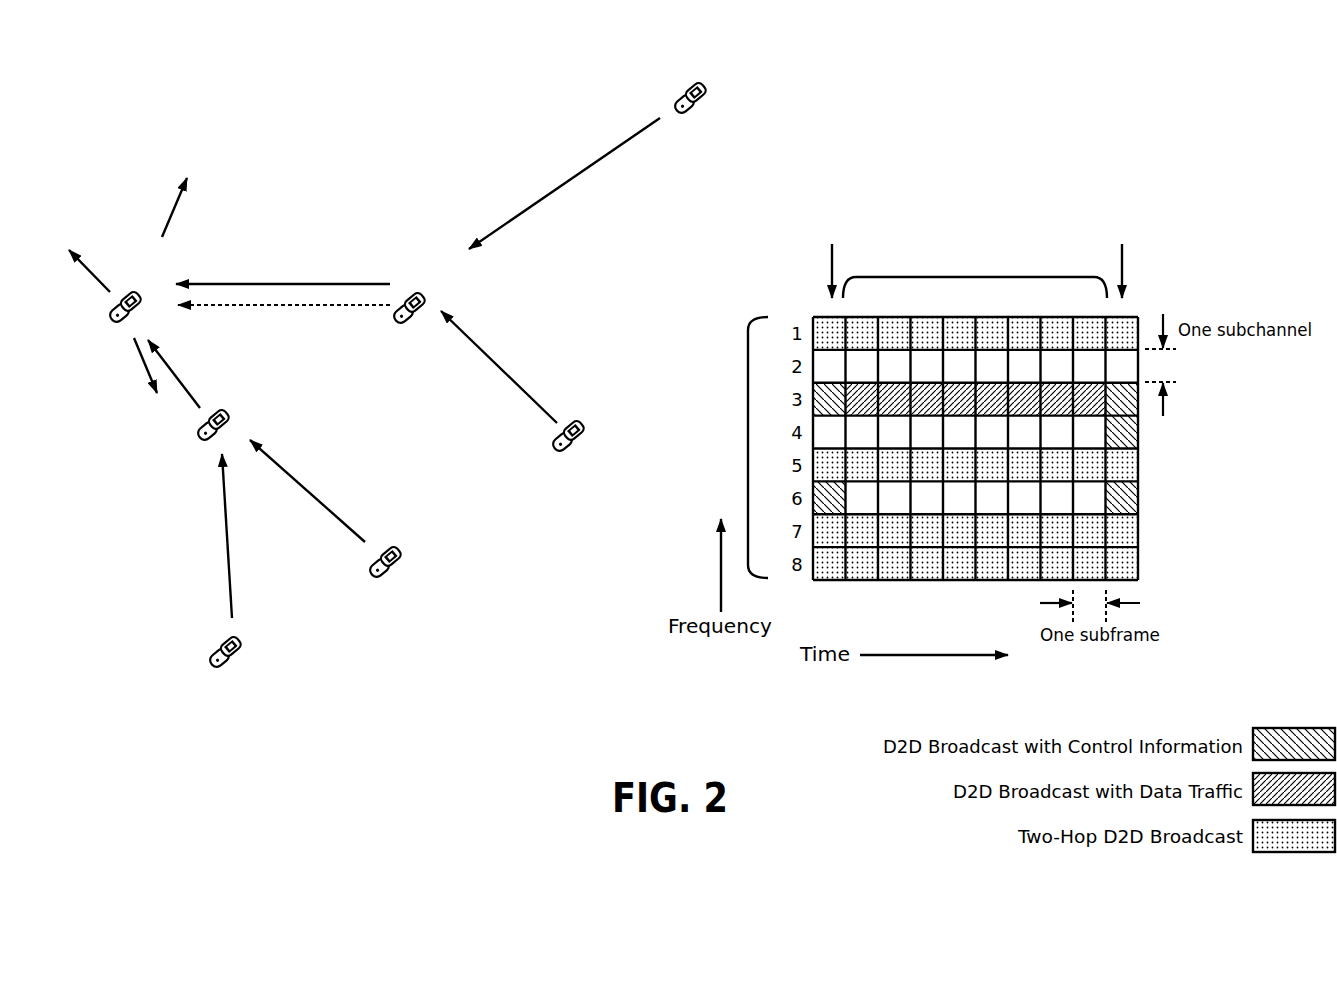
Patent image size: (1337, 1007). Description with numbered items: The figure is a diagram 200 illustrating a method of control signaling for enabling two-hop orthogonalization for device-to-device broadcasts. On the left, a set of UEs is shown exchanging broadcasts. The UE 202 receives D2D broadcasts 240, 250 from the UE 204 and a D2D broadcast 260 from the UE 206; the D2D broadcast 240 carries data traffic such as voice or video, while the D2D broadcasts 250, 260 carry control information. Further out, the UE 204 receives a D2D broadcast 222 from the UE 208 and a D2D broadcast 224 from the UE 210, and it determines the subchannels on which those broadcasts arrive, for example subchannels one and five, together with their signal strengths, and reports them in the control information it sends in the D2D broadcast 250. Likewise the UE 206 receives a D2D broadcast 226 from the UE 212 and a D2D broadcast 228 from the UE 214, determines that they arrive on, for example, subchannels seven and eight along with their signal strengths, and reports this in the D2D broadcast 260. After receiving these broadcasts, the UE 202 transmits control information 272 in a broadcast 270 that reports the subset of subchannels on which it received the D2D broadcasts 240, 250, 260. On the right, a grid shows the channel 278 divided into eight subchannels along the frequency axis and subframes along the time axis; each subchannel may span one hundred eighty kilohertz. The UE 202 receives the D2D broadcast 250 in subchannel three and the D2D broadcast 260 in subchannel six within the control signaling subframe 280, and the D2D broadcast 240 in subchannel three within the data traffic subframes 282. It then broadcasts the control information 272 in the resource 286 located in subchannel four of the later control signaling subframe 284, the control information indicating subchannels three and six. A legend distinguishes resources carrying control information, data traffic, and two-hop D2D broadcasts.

The diagram 200 is at (114, 66).
The UE 202 is at (141, 292).
The UE 204 is at (423, 292).
The UE 206 is at (202, 439).
The UE 208 is at (582, 421).
The UE 210 is at (709, 80).
The UE 212 is at (240, 635).
The UE 214 is at (398, 545).
The D2D broadcast 222 is at (499, 367).
The D2D broadcast 224 is at (564, 183).
The D2D broadcast 226 is at (246, 536).
The D2D broadcast 228 is at (307, 491).
The D2D broadcast 240 is at (284, 320).
The D2D broadcast 250 is at (283, 269).
The D2D broadcast 260 is at (188, 374).
The broadcast 270 is at (122, 285).
The control information 272 is at (210, 162).
The channel 278 is at (719, 447).
The control signaling subframe 280 is at (835, 216).
The data traffic subframes 282 is at (975, 248).
The control signaling subframe 284 is at (1120, 217).
The resource 286 is at (1126, 436).